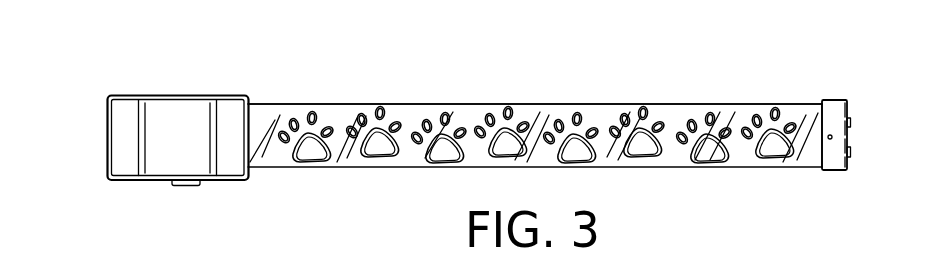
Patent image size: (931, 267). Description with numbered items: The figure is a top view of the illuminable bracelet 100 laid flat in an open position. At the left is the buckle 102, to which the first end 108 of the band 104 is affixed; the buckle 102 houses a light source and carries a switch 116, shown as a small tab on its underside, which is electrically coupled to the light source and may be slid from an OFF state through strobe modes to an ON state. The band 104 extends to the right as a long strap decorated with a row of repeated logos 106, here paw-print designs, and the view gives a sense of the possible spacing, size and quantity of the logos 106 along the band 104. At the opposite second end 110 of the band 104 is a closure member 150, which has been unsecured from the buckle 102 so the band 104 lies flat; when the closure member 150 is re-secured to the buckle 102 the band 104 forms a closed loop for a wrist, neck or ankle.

The illuminable bracelet 100 is at (81, 37).
The buckle 102 is at (179, 94).
The band 104 is at (680, 103).
The logos 106 is at (378, 157).
The first end 108 is at (252, 120).
The second end 110 is at (817, 155).
The switch 116 is at (189, 185).
The closure member 150 is at (836, 98).